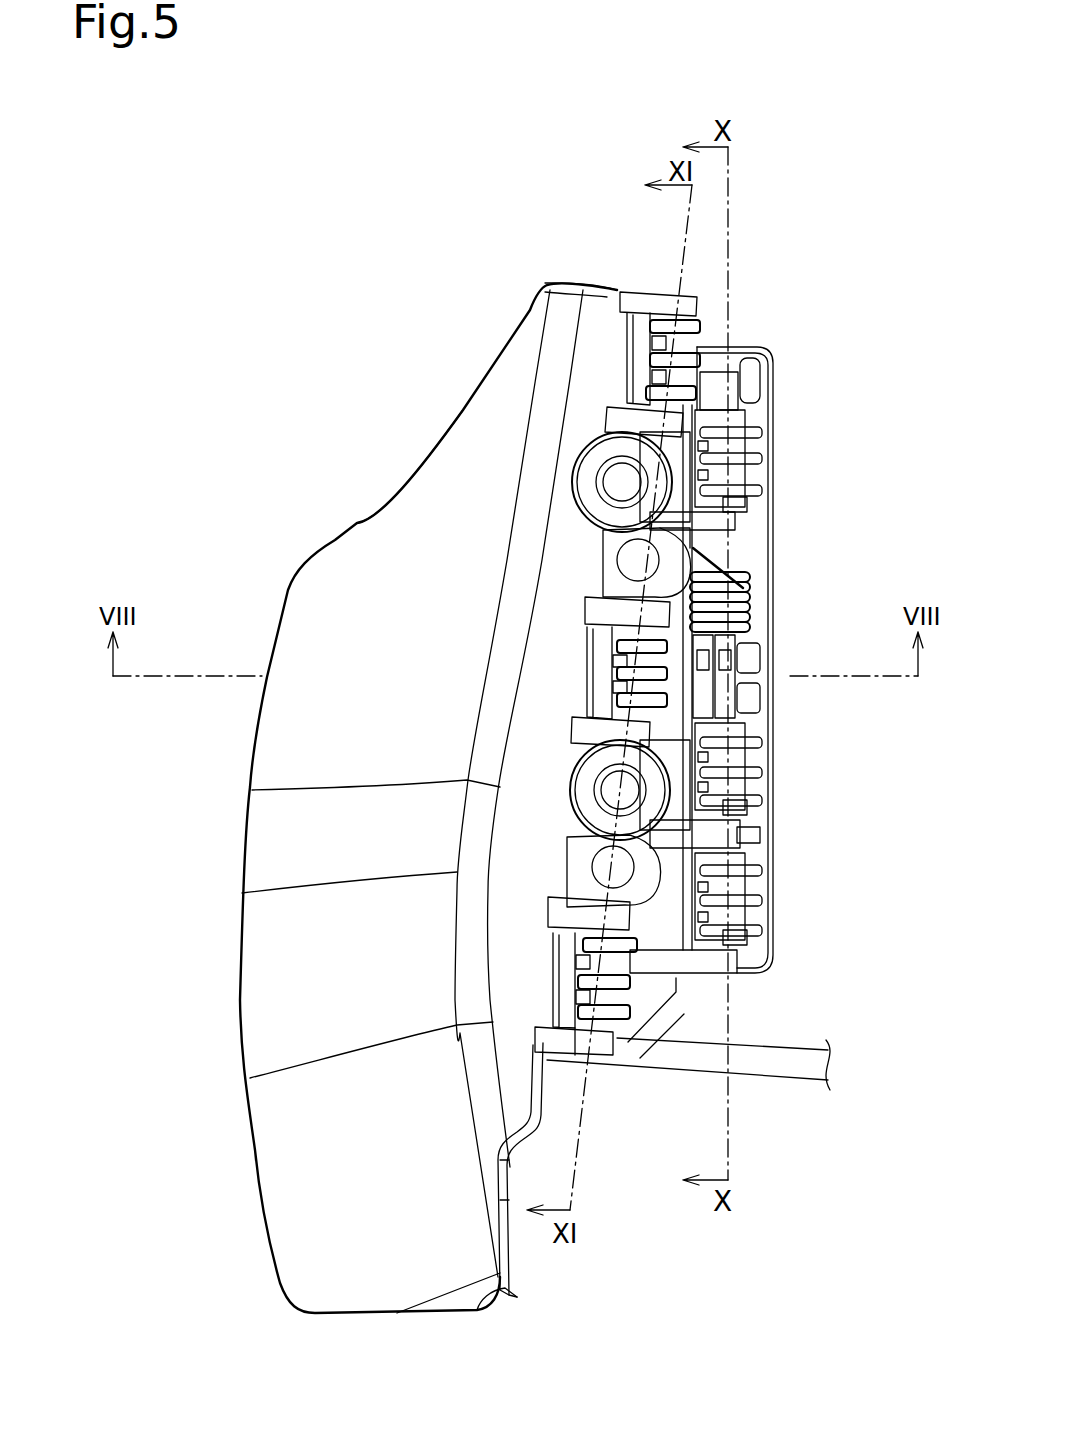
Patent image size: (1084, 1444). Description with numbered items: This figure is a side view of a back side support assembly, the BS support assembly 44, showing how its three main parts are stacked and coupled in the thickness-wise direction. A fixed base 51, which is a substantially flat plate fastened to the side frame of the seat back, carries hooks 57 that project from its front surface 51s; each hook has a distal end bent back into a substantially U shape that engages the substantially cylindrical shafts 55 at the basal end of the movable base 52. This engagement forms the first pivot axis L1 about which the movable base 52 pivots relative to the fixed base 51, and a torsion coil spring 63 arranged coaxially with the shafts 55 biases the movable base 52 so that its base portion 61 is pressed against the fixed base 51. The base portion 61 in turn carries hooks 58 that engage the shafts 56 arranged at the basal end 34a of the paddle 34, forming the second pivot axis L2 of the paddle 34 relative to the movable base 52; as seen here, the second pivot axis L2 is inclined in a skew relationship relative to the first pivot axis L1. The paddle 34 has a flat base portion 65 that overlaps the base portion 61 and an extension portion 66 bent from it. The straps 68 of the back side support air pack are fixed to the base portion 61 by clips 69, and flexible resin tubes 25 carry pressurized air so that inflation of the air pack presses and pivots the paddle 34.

The BS support assembly 44 is at (170, 188).
The paddle 34 is at (250, 862).
The basal end 34a is at (543, 1103).
The extension portion 66 is at (368, 553).
The base portion 65 is at (600, 300).
The shafts 56 is at (662, 312).
The hooks 58 is at (706, 372).
The fixed base 51 is at (775, 352).
The front surface 51s is at (757, 411).
The hooks 57 is at (762, 459).
The shafts 55 is at (727, 503).
The straps 68 is at (677, 563).
The torsion coil spring 63 is at (745, 582).
The clip 69 is at (630, 556).
The base portion 61 is at (662, 742).
The movable base 52 is at (660, 1042).
The tubes 25 is at (793, 1080).
The first pivot axis L1 is at (728, 188).
The second pivot axis L2 is at (686, 213).